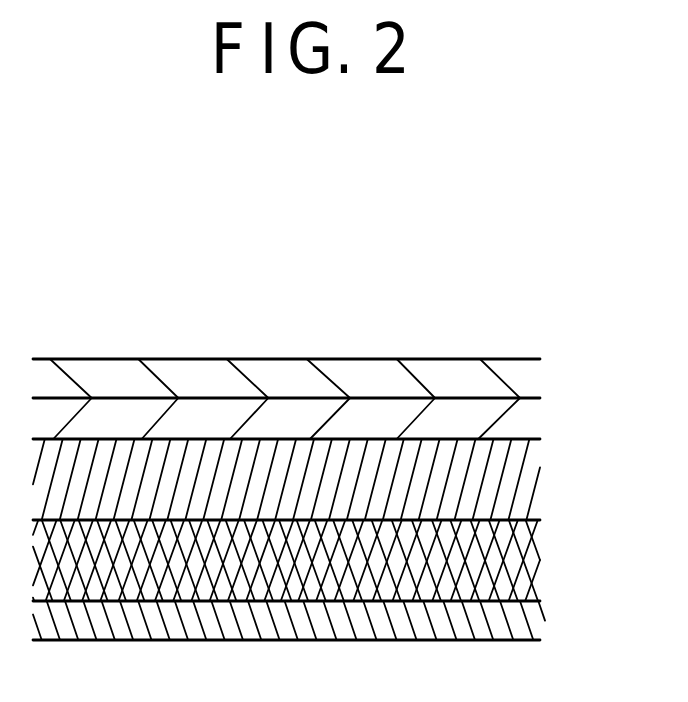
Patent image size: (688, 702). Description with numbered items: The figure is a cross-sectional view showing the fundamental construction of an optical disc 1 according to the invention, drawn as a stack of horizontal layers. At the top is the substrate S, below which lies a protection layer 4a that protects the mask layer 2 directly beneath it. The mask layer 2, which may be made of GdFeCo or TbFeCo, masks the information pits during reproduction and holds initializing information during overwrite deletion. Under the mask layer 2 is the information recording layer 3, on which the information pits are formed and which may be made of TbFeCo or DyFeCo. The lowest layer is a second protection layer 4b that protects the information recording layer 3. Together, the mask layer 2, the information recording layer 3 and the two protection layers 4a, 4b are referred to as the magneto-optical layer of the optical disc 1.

The optical disc 1 is at (263, 295).
The substrate S is at (552, 357).
The protection layer 4a is at (552, 397).
The mask layer 2 is at (552, 442).
The information recording layer 3 is at (552, 525).
The protection layer 4b is at (552, 604).